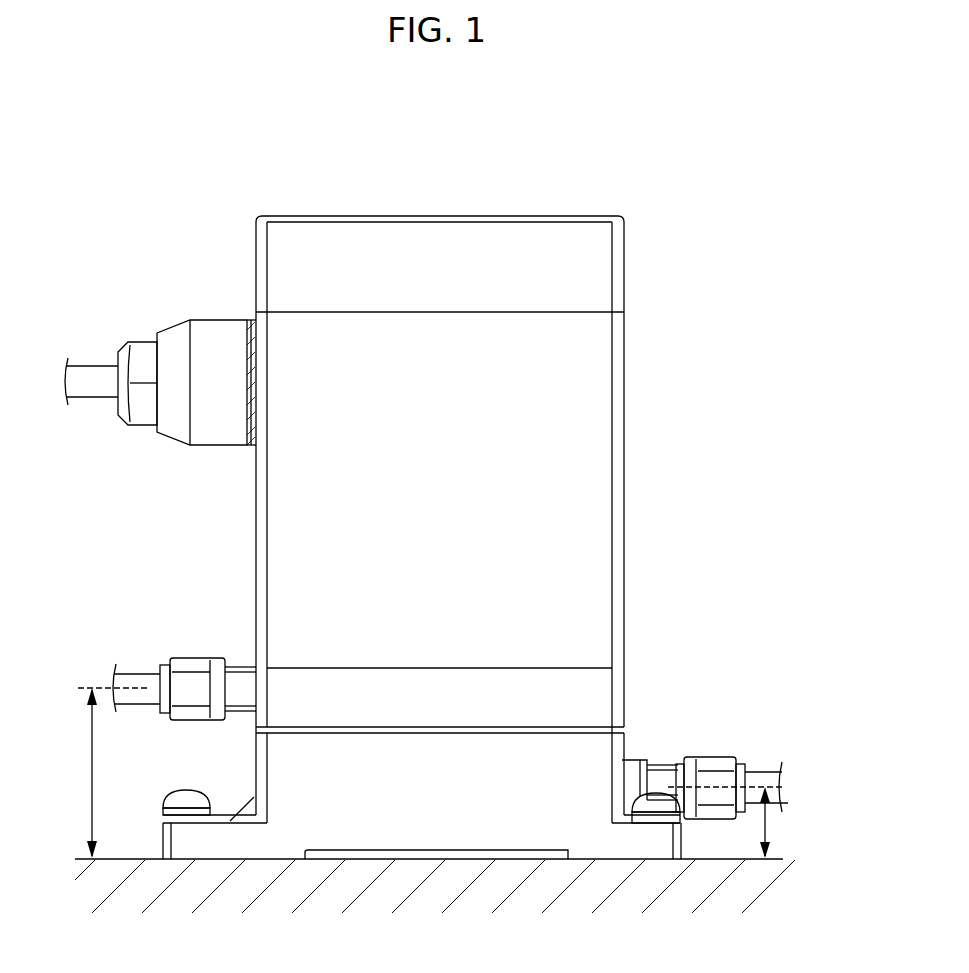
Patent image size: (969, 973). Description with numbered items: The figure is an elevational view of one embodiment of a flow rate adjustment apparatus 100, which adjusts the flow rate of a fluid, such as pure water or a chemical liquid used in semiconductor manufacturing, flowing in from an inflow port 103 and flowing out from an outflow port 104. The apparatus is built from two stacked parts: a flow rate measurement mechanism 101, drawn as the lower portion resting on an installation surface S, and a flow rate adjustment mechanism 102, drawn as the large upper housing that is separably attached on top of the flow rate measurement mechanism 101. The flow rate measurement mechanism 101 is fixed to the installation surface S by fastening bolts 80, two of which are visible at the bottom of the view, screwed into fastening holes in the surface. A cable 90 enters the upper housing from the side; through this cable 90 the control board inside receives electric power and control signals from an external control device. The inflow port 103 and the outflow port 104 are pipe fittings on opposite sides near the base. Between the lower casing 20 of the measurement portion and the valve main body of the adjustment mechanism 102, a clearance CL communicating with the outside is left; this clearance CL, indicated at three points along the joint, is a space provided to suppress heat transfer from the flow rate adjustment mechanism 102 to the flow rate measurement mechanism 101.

The flow rate adjustment apparatus 100 is at (604, 162).
The flow rate adjustment mechanism 102 is at (648, 216).
The cable 90 is at (96, 366).
The outflow port 104 is at (188, 658).
The inflow port 103 is at (712, 757).
The lower casing 20 is at (256, 756).
The fastening bolt 80 is at (170, 790).
The flow rate measurement mechanism 101 is at (783, 755).
The installation surface S is at (120, 855).
The clearance CL is at (288, 712).